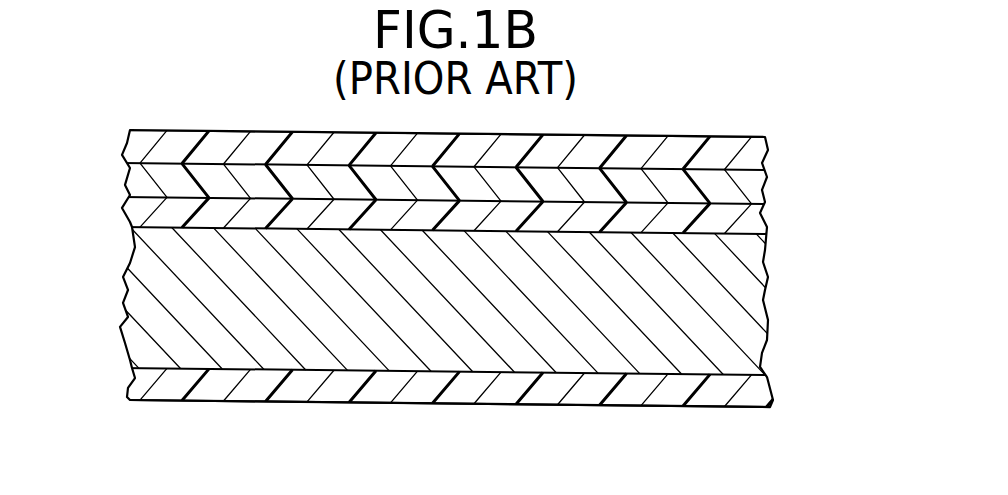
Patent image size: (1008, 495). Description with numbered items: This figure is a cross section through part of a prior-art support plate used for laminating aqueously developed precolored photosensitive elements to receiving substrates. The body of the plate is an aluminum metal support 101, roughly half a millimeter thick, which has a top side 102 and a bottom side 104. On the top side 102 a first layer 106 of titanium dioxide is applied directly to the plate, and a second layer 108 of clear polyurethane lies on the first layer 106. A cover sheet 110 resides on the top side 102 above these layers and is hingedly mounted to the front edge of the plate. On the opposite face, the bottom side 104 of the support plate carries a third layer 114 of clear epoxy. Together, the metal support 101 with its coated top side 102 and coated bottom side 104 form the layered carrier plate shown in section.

The aluminum metal support 101 is at (766, 300).
The top side 102 is at (786, 180).
The bottom side 104 is at (775, 416).
The first layer 106 is at (128, 209).
The second layer 108 is at (128, 178).
The cover sheet 110 is at (128, 150).
The third layer 114 is at (130, 381).